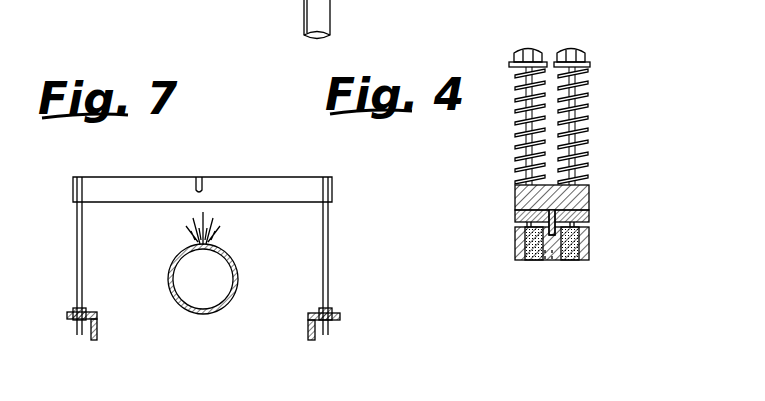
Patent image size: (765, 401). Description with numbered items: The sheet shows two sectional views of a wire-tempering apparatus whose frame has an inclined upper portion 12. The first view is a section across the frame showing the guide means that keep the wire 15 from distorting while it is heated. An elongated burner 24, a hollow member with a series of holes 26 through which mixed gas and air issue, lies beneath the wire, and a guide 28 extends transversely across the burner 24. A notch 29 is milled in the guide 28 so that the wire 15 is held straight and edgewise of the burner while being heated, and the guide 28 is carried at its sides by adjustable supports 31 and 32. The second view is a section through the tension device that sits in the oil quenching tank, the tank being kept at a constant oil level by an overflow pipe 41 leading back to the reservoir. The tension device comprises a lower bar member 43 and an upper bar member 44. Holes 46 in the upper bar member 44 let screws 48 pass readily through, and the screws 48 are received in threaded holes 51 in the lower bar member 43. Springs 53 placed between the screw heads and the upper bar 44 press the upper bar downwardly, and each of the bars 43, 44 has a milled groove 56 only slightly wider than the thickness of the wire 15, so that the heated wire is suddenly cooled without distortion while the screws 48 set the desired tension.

In FIG. 7, the inclined upper portion 12 is at (97, 326).
In FIG. 4, the wire 15 is at (516, 208).
In FIG. 7, the burner 24 is at (203, 314).
In FIG. 7, the holes 26 is at (206, 246).
In FIG. 7, the guides 28 is at (247, 185).
In FIG. 7, the notch 29 is at (197, 177).
In FIG. 7, the adjustable support 31 is at (77, 258).
In FIG. 7, the adjustable support 32 is at (332, 255).
In FIG. 4, the overflow pipe 41 is at (330, 12).
In FIG. 4, the lower bar member 43 is at (590, 242).
In FIG. 4, the upper bar member 44 is at (590, 195).
In FIG. 4, the holes 46 is at (515, 193).
In FIG. 4, the screws 48 is at (566, 50).
In FIG. 4, the threaded holes 51 is at (561, 260).
In FIG. 4, the springs 53 is at (517, 155).
In FIG. 4, the milled groove 56 is at (592, 228).